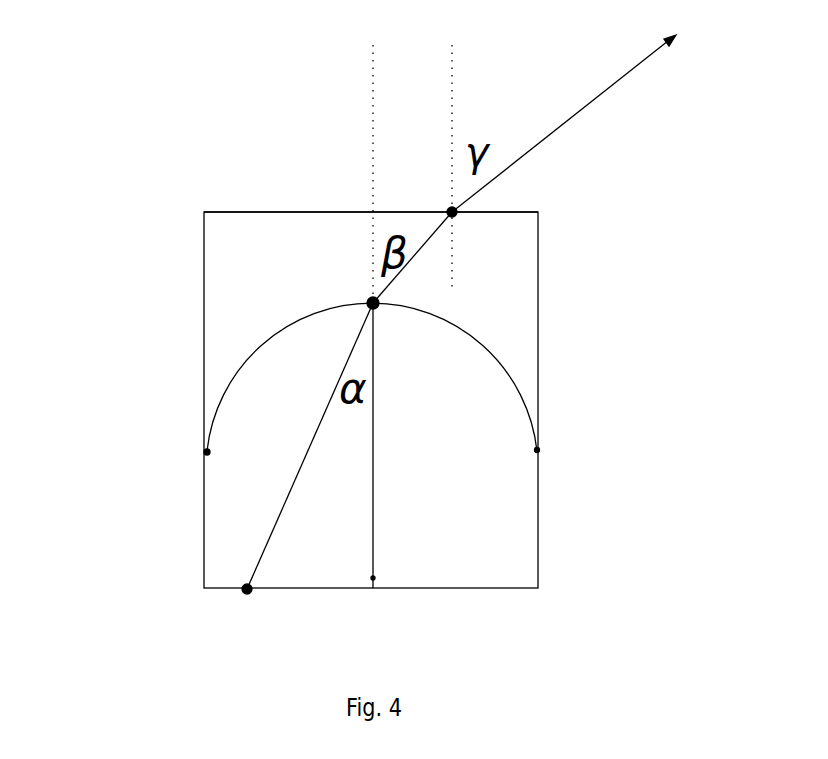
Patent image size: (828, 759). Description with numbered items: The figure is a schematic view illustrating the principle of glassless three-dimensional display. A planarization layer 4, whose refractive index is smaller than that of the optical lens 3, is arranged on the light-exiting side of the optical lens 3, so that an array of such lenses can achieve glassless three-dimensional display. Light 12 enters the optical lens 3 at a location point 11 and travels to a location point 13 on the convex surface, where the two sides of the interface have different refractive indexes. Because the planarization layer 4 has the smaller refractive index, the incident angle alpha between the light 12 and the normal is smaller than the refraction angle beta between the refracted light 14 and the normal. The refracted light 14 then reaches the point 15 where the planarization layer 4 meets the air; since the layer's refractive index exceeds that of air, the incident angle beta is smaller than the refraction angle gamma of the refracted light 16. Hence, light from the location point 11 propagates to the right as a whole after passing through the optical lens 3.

The optical lens 3 is at (220, 470).
The planarization layer 4 is at (225, 290).
The location point 11 is at (247, 589).
The light 12 is at (297, 482).
The location point 13 is at (375, 303).
The refracted light 14 is at (410, 261).
The exit point on the exit surface 15 is at (452, 212).
The refracted light 16 is at (542, 143).